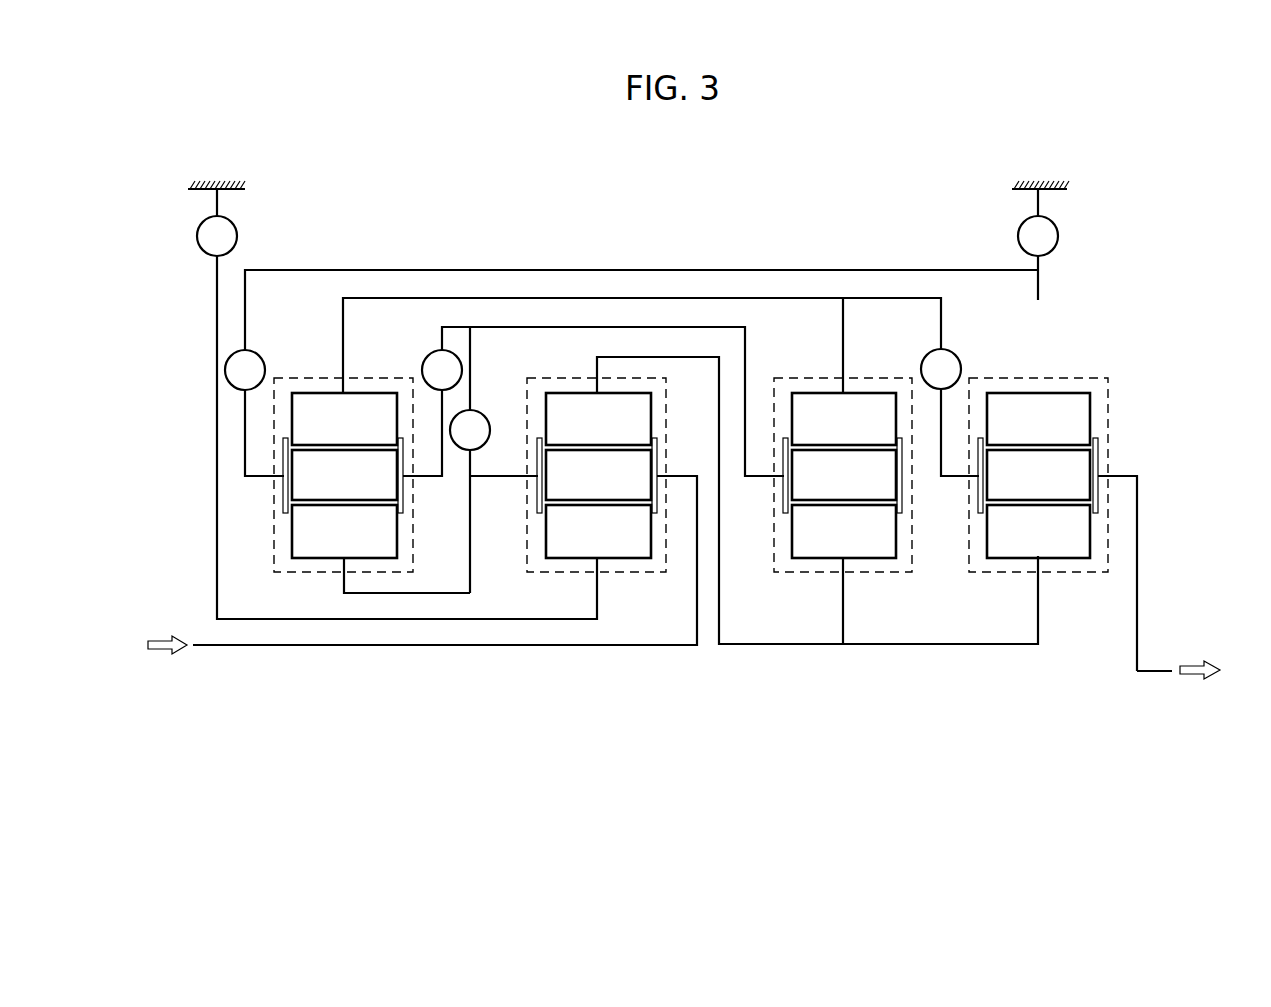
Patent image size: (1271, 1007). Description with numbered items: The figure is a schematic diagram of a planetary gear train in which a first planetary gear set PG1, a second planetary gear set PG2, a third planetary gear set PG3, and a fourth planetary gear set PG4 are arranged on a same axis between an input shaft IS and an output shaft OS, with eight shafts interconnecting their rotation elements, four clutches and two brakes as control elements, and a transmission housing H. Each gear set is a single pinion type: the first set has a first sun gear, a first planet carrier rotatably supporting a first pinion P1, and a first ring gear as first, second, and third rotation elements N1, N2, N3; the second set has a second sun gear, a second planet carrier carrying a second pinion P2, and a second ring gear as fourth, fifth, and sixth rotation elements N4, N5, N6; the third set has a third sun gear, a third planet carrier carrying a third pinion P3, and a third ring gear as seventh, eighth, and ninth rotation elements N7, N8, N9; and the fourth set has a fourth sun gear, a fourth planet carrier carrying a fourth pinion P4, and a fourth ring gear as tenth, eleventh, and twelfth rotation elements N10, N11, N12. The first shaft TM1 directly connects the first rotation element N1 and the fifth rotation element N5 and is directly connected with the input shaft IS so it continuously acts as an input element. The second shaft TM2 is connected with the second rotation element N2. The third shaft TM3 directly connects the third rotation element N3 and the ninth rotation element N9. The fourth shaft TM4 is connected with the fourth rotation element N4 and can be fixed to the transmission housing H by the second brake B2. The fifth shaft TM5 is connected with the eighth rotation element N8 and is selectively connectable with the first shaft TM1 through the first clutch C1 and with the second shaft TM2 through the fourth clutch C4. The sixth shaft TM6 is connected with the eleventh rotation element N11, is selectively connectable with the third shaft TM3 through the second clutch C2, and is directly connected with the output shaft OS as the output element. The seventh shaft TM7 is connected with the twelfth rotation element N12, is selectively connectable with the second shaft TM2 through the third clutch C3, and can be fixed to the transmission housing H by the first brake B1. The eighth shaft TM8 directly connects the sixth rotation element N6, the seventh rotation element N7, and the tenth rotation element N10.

The first shaft TM1 is at (393, 595).
The second shaft TM2 is at (245, 452).
The third shaft TM3 is at (621, 297).
The fourth shaft TM4 is at (465, 620).
The fifth shaft TM5 is at (700, 327).
The sixth shaft TM6 is at (1137, 508).
The seventh shaft TM7 is at (866, 270).
The eighth shaft TM8 is at (893, 646).
The first planetary gear set PG1 is at (318, 568).
The second planetary gear set PG2 is at (571, 568).
The third planetary gear set PG3 is at (818, 568).
The fourth planetary gear set PG4 is at (1012, 567).
The first rotation element N1 is at (344, 531).
The second rotation element N2 is at (283, 499).
The third rotation element N3 is at (344, 419).
The fourth rotation element N4 is at (598, 531).
The fifth rotation element N5 is at (537, 499).
The sixth rotation element N6 is at (598, 419).
The seventh rotation element N7 is at (844, 531).
The eighth rotation element N8 is at (783, 499).
The ninth rotation element N9 is at (844, 419).
The tenth rotation element N10 is at (1038, 531).
The eleventh rotation element N11 is at (978, 499).
The twelfth rotation element N12 is at (1038, 419).
The first pinion P1 is at (344, 475).
The second pinion P2 is at (598, 475).
The third pinion P3 is at (844, 475).
The fourth pinion P4 is at (1038, 475).
The first brake B1 is at (1038, 244).
The second brake B2 is at (217, 244).
The first clutch C1 is at (470, 430).
The second clutch C2 is at (941, 369).
The third clutch C3 is at (245, 370).
The fourth clutch C4 is at (442, 370).
The input shaft IS is at (205, 648).
The output shaft OS is at (1150, 673).
The transmission housing H is at (210, 181).